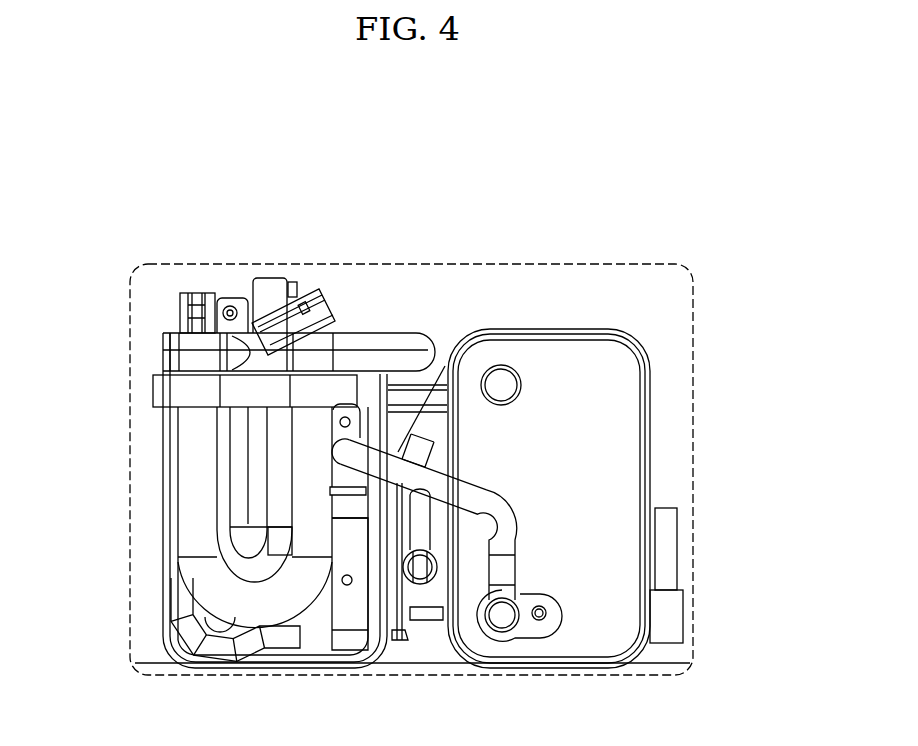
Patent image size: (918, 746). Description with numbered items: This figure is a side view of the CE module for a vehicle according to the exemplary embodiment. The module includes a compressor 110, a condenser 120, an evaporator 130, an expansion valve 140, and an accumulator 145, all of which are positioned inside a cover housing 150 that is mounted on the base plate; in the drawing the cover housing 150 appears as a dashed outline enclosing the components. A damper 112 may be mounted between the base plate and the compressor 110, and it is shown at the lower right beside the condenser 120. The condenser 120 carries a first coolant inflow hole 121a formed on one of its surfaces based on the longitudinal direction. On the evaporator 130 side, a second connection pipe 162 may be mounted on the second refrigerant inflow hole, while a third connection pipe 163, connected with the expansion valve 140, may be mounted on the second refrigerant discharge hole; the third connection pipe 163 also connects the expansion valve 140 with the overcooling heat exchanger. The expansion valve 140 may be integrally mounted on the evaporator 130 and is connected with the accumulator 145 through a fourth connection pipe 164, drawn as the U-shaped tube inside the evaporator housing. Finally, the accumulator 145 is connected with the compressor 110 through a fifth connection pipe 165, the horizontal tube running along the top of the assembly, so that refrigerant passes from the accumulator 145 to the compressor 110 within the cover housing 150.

The compressor 110 is at (398, 462).
The damper 112 is at (665, 618).
The condenser 120 is at (653, 404).
The first coolant inflow hole 121a is at (515, 373).
The evaporator 130 is at (158, 438).
The expansion valve 140 is at (350, 545).
The accumulator 145 is at (176, 535).
The cover housing 150 is at (647, 263).
The second connection pipe 162 is at (505, 558).
The third connection pipe 163 is at (210, 643).
The fourth connection pipe 164 is at (240, 483).
The fifth connection pipe 165 is at (379, 340).